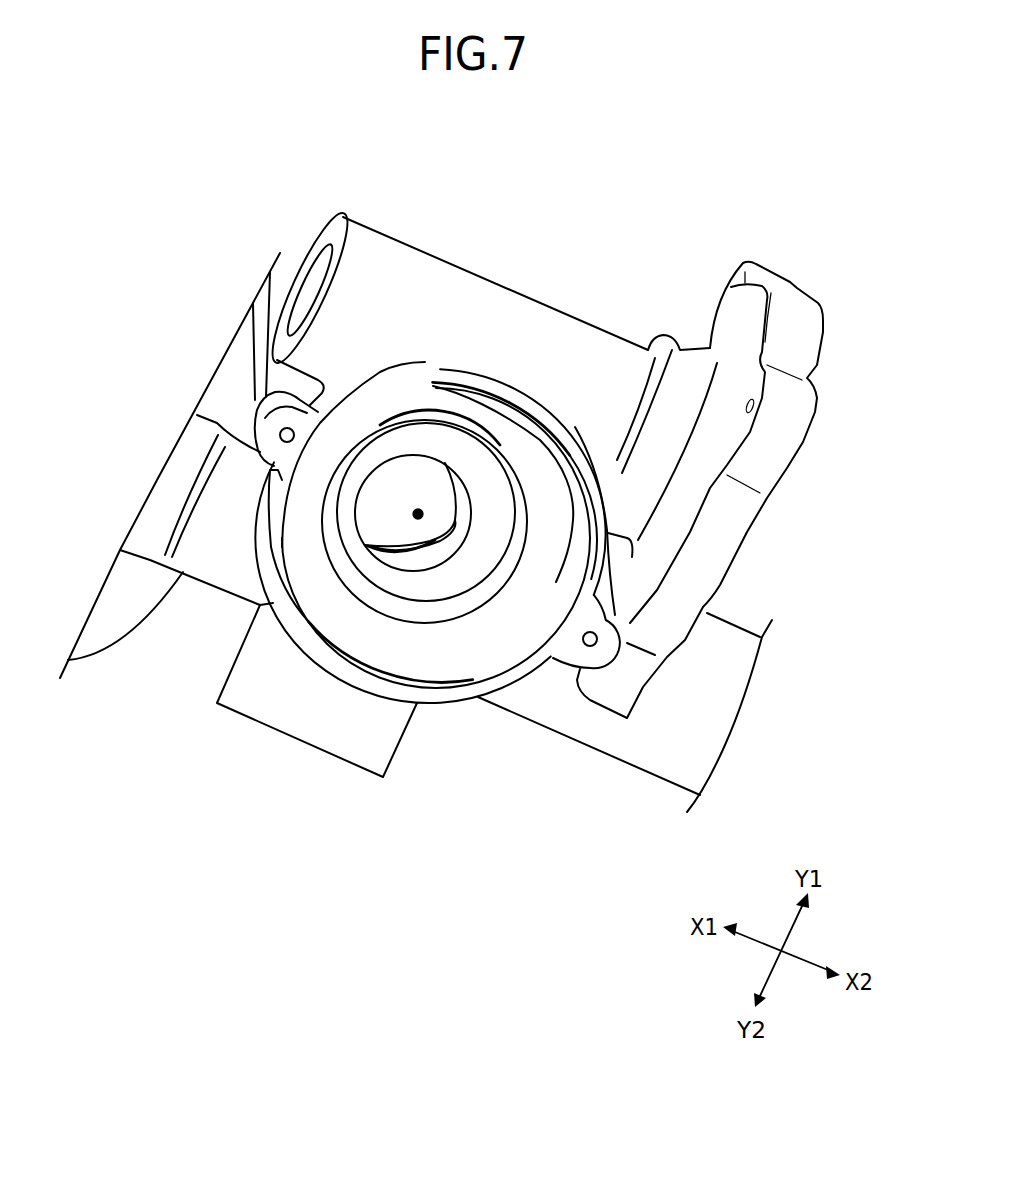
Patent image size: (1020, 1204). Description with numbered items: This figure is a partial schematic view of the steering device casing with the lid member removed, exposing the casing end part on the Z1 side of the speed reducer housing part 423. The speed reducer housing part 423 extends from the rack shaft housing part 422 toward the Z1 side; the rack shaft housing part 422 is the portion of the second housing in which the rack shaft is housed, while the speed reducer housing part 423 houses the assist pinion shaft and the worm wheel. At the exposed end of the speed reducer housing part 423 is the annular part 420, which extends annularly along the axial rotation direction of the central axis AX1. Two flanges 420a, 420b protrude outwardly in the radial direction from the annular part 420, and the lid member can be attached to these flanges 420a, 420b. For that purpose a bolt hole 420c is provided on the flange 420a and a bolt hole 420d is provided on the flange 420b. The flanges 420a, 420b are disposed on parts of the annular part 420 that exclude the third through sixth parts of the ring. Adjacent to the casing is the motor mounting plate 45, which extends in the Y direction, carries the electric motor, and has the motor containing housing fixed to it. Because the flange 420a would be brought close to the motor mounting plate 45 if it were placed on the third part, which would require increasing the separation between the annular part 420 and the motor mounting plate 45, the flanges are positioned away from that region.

The annular part 420 is at (473, 380).
The central axis AX1 is at (418, 514).
The speed reducer housing part 423 is at (567, 333).
The motor mounting plate 45 is at (785, 415).
The rack shaft housing part 422 is at (705, 693).
The flange 420a is at (607, 645).
The flange 420b is at (282, 397).
The bolt hole 420c is at (588, 644).
The bolt hole 420d is at (285, 435).